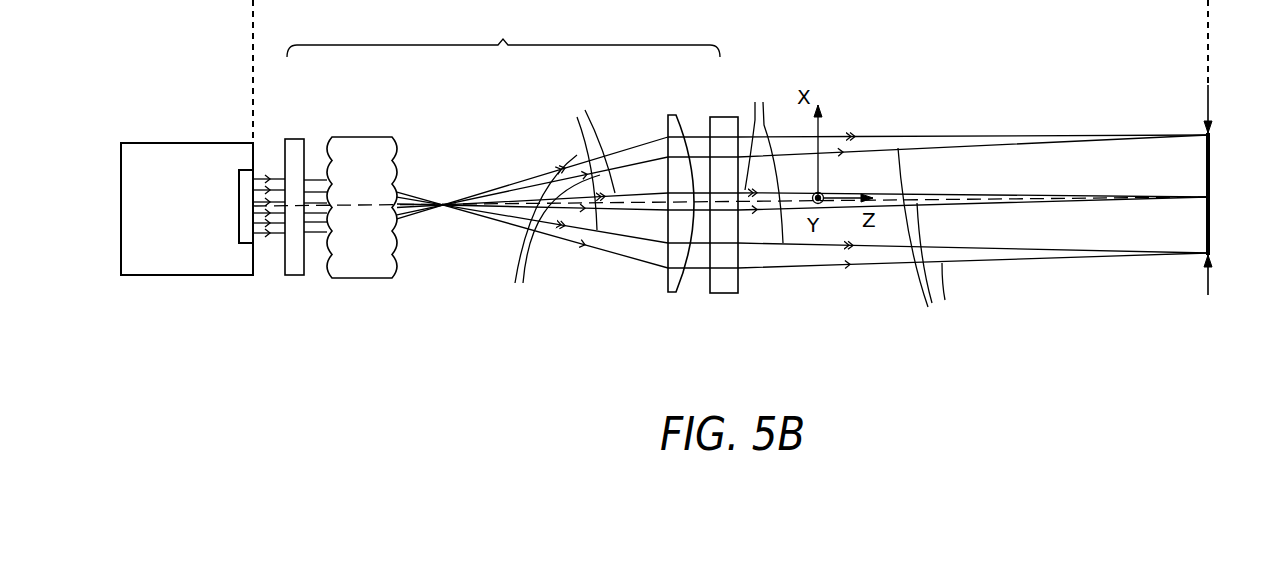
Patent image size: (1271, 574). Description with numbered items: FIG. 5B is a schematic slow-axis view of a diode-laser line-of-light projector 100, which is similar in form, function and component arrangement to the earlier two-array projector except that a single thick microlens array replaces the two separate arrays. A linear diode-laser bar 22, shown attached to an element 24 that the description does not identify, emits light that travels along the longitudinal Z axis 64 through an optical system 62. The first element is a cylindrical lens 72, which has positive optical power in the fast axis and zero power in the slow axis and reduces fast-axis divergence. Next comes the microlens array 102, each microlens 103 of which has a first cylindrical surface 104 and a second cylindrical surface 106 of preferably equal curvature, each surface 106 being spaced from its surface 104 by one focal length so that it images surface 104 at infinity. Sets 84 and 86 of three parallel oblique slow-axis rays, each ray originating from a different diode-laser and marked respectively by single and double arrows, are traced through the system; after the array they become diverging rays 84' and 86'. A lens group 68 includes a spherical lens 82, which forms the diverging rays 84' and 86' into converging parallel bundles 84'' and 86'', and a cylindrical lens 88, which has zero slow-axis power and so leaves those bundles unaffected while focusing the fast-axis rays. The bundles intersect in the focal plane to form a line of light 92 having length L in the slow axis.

The light source 24 is at (148, 160).
The diode-laser bar 22 is at (236, 185).
The set of parallel oblique slow-axis rays 84 is at (247, 129).
The set of parallel oblique slow-axis rays 86 is at (262, 259).
The first cylindrical lens 72 is at (293, 272).
The microlens array 102 is at (363, 280).
The microlens 103 is at (395, 248).
The first cylindrical surface 104 is at (330, 172).
The second cylindrical surface 106 is at (397, 175).
The diverging slow-axis rays 84' is at (532, 223).
The diverging slow-axis rays 86' is at (584, 161).
The longitudinal (Z) axis 64 is at (660, 203).
The spherical lens 82 is at (672, 135).
The lens group 68 is at (695, 307).
The cylindrical lens 88 is at (722, 122).
The converging parallel bundle of rays 86'' is at (973, 160).
The converging parallel bundle of rays 84'' is at (973, 235).
The line of light 92 is at (1198, 225).
The optical system 62 is at (503, 34).
The diode-laser line-of-light projector 100 is at (812, 342).